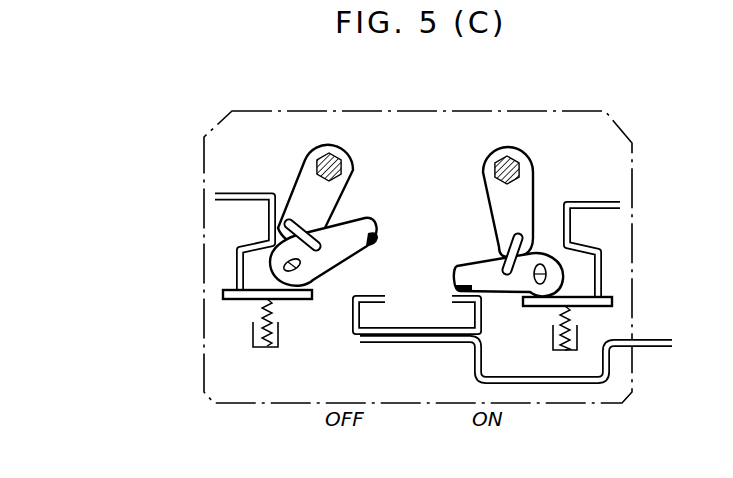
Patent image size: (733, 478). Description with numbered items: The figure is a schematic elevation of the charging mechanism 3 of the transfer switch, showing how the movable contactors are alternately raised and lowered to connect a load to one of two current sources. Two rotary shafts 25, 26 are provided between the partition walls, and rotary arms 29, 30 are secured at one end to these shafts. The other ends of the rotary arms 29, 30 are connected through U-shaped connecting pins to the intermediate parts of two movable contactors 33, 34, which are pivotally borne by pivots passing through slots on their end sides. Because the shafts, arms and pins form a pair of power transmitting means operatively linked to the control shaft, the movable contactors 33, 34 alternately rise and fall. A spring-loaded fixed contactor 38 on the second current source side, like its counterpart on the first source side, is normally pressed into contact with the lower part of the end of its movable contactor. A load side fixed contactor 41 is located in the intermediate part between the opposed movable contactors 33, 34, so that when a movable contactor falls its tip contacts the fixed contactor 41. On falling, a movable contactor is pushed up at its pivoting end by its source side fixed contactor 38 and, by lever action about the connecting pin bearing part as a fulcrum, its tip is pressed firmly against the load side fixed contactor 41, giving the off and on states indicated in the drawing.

The charging mechanism 3 is at (624, 121).
The rotary shaft 25 is at (329, 154).
The rotary shaft 26 is at (508, 157).
The rotary arm 29 is at (296, 190).
The rotary arm 30 is at (522, 195).
The movable contactor 33 is at (357, 216).
The movable contactor 34 is at (480, 262).
The fixed contactor 38 is at (584, 303).
The fixed contactor 41 is at (417, 337).